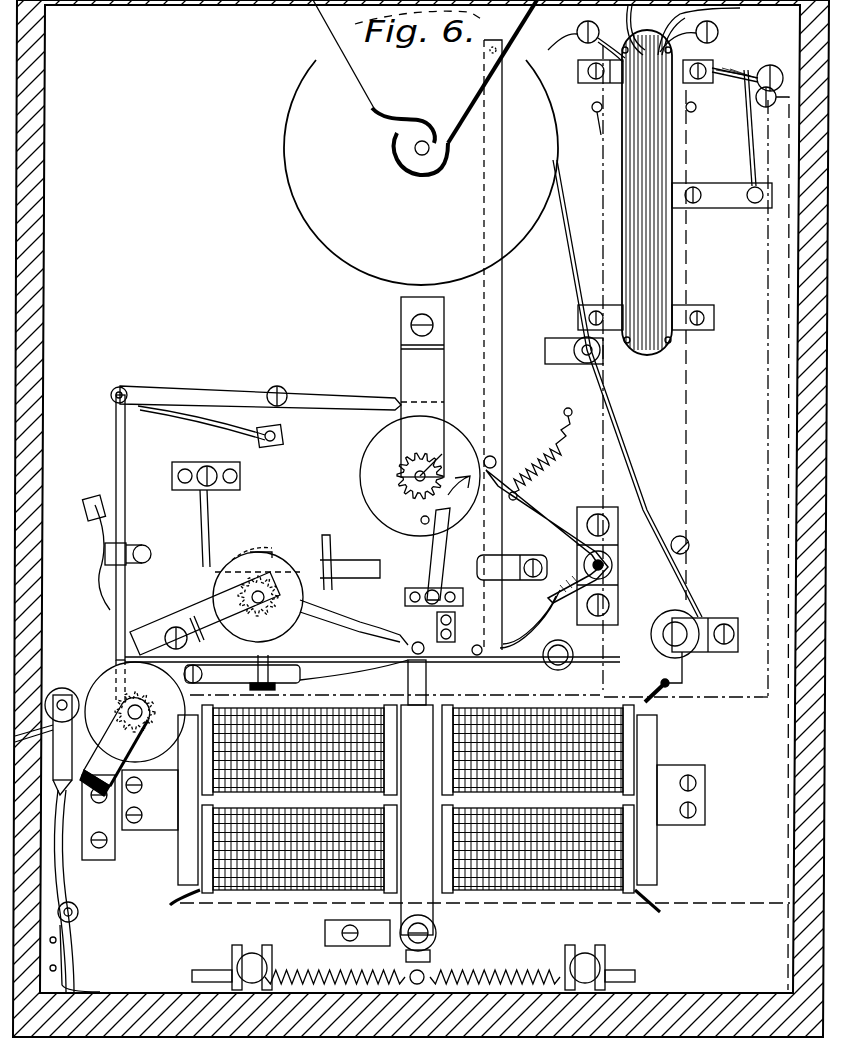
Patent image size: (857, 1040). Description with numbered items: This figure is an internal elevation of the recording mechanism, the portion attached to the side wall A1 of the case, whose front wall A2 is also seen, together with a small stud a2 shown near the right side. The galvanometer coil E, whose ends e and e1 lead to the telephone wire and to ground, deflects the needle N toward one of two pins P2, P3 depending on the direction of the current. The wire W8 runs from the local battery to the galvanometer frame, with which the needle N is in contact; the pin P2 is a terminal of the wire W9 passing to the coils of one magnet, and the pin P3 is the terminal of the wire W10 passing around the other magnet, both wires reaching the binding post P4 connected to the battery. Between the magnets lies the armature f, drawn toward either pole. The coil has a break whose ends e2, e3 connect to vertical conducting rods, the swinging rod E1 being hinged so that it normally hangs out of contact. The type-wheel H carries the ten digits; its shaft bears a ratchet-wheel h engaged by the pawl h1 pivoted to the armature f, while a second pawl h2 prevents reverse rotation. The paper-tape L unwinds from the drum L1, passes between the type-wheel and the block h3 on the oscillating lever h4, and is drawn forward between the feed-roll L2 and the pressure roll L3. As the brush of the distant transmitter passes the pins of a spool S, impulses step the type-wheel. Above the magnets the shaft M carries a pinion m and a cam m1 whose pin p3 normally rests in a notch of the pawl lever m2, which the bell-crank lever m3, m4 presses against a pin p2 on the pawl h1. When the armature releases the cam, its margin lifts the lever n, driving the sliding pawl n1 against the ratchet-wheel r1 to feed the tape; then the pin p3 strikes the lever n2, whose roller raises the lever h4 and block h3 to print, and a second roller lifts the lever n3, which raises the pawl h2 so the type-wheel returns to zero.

The side wall A1 is at (420, 499).
The front wall A2 is at (45, 355).
The drum L1 is at (421, 172).
The paper-tape L is at (636, 488).
The feed-roll L2 is at (132, 729).
The pressure roll L3 is at (62, 688).
The galvanometer coil E is at (672, 262).
The swinging conducting rod E1 is at (268, 880).
The galvanometer coil end e is at (585, 41).
The galvanometer coil end e1 is at (718, 34).
The wire end at coil break e2 is at (624, 30).
The wire end at coil break e3 is at (699, 28).
The wire W8 is at (778, 88).
The wire W9 is at (485, 513).
The wire W10 is at (792, 568).
The needle N is at (603, 278).
The pin P2 is at (588, 122).
The pin P3 is at (690, 112).
The binding post P4 is at (765, 103).
The shaft M is at (440, 468).
The pinion m is at (447, 501).
The cam m1 is at (368, 473).
The oscillating pawl lever m2 is at (509, 425).
The bell-crank lever m3 is at (540, 520).
The bell-crank lever m4 is at (532, 620).
The pin p2 is at (470, 640).
The pin p3 is at (495, 458).
The lever n is at (220, 386).
The vertically sliding pawl n1 is at (114, 443).
The lever n2 is at (460, 540).
The vertically oscillating lever n3 is at (345, 605).
The type-wheel H is at (272, 552).
The ratchet-wheel h is at (258, 555).
The pawl h1 is at (368, 625).
The second pawl h2 is at (345, 548).
The block h3 is at (300, 648).
The vertically oscillating lever h4 is at (425, 678).
The ratchet-wheel r1 is at (143, 690).
The stud a2 is at (689, 540).
The spool S is at (420, 720).
The armature f is at (432, 925).